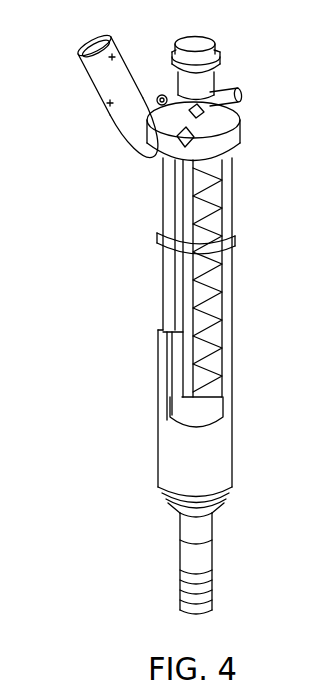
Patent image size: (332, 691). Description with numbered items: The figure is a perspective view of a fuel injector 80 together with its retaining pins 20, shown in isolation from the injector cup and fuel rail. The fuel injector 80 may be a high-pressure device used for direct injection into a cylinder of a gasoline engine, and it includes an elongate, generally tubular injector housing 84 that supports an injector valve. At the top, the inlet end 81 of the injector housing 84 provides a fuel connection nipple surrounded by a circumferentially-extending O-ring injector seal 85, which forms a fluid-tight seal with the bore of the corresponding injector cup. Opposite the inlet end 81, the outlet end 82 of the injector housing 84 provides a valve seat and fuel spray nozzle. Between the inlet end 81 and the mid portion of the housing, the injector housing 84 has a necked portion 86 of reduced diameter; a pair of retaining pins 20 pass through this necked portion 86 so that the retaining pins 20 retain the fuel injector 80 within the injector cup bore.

The fuel injector 80 is at (113, 212).
The inlet end 81 is at (203, 40).
The outlet end 82 is at (205, 612).
The injector housing 84 is at (232, 298).
The injector seal 85 is at (216, 63).
The necked portion 86 is at (173, 101).
The retaining pin 20 is at (160, 95).